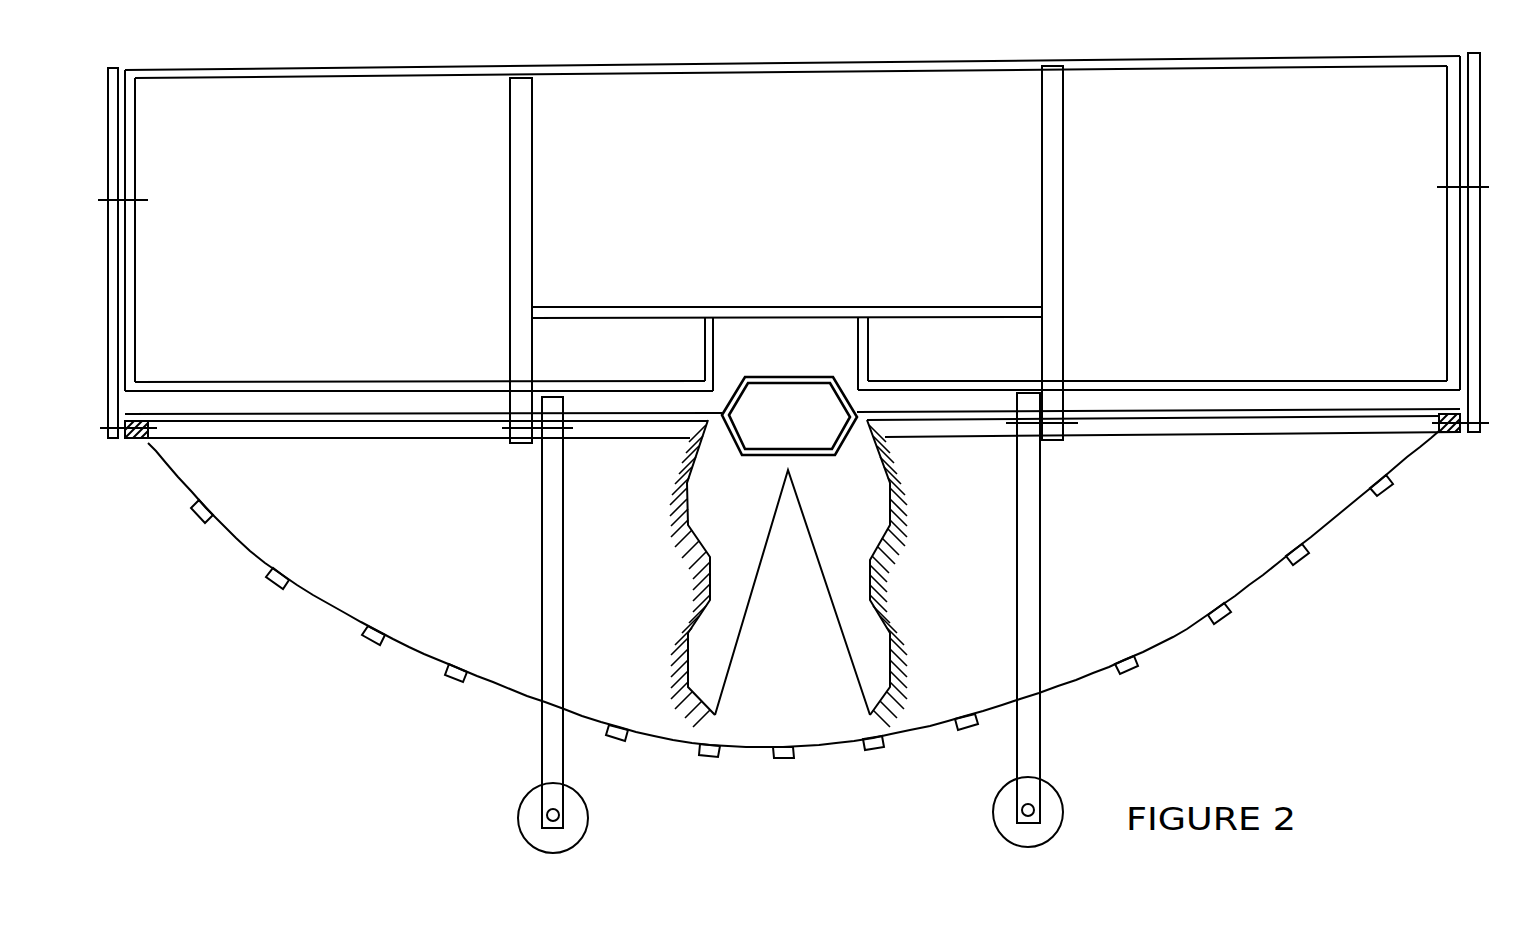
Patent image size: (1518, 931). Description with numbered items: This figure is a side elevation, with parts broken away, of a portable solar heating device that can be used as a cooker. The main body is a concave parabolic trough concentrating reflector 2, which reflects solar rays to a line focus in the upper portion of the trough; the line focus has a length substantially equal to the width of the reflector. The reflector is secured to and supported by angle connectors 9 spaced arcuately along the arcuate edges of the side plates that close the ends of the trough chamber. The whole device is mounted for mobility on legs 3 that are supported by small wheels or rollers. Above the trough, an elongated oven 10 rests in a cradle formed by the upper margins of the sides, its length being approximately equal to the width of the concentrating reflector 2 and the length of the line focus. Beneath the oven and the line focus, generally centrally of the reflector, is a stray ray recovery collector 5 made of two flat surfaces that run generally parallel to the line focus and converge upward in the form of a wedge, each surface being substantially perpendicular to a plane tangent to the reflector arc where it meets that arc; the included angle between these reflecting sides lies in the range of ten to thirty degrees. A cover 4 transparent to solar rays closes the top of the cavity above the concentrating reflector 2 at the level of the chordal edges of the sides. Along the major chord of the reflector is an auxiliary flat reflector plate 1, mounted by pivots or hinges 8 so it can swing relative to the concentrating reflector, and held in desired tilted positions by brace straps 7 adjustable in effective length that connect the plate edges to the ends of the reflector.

The auxiliary flat reflector plate 1 is at (1403, 279).
The concave parabolic trough concentrating reflector 2 is at (1335, 548).
The legs 3 is at (1050, 664).
The cover 4 is at (1338, 423).
The stray ray recovery collector 5 is at (867, 680).
The brace straps 7 is at (123, 473).
The pivots or hinges 8 is at (483, 464).
The angle connectors 9 is at (273, 600).
The oven 10 is at (711, 466).